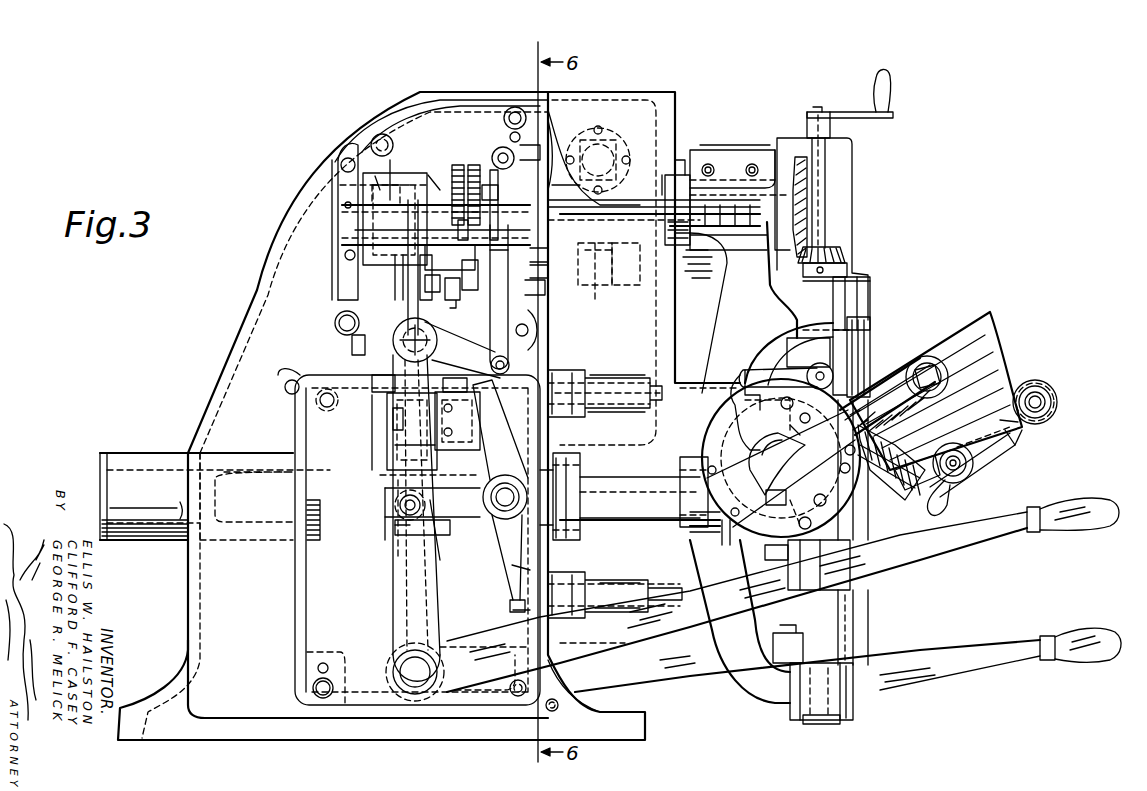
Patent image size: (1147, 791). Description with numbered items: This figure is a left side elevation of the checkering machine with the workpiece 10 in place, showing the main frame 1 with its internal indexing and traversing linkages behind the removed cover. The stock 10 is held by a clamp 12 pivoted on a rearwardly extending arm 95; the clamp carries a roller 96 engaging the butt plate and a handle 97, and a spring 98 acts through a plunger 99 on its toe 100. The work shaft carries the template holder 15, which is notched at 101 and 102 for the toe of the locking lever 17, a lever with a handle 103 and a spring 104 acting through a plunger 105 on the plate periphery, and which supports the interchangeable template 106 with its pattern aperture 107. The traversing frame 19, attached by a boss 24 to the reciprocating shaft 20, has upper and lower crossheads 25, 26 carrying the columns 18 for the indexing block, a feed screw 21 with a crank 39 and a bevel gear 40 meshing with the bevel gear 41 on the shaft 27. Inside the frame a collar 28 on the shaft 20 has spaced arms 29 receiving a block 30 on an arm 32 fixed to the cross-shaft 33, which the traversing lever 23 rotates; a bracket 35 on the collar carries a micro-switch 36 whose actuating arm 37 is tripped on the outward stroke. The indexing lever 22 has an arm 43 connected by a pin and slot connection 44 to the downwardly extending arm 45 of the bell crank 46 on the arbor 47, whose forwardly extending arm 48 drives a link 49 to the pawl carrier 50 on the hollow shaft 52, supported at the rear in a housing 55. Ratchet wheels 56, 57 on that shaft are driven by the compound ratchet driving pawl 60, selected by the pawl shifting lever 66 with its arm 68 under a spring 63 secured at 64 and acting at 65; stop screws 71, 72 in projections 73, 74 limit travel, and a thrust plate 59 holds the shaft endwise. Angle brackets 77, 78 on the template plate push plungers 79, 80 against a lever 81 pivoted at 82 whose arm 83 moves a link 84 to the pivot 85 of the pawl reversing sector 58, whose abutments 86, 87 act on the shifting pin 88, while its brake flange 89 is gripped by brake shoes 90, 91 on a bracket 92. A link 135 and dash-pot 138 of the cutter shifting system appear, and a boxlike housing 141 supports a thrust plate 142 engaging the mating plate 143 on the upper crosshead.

The main frame 1 is at (612, 90).
The workpiece 10 is at (990, 357).
The clamp 12 is at (1005, 438).
The template holder 15 is at (840, 500).
The locking lever 17 is at (845, 392).
The columns 18 is at (850, 620).
The traversing frame 19 is at (700, 545).
The reciprocating shaft 20 is at (610, 512).
The feed screw 21 is at (827, 215).
The indexing lever 22 is at (1090, 502).
The traversing lever 23 is at (1090, 633).
The boss 24 is at (690, 522).
The upper crosshead 25 is at (855, 305).
The lower crosshead 26 is at (852, 695).
The shaft 27 is at (640, 228).
The collar 28 is at (395, 525).
The arms 29 is at (385, 492).
The block 30 is at (433, 555).
The arm 32 is at (432, 575).
The cross-shaft 33 is at (415, 680).
The bracket 35 is at (385, 455).
The micro-switch 36 is at (455, 450).
The actuating arm 37 is at (458, 438).
The crank 39 is at (896, 82).
The bevel gear 40 is at (840, 256).
The bevel gear 41 is at (810, 178).
The arm 43 is at (398, 555).
The pin and slot connection 44 is at (375, 428).
The downwardly extending arm 45 is at (375, 390).
The bell crank 46 is at (345, 322).
The arbor 47 is at (350, 347).
The forwardly extending arm 48 is at (470, 355).
The link 49 is at (505, 360).
The pawl carrier 50 is at (494, 162).
The hollow shaft 52 is at (390, 195).
The housing 55 is at (380, 175).
The ratchet wheel 56 is at (474, 170).
The ratchet wheel 57 is at (455, 172).
The pawl reversing sector 58 is at (428, 175).
The thrust plate 59 is at (560, 170).
The compound ratchet driving pawl 60 is at (480, 212).
The spring 63 is at (540, 256).
The spring anchorage 64 is at (548, 230).
The spring connection 65 is at (540, 290).
The pawl shifting lever 66 is at (475, 282).
The arm 68 is at (469, 236).
The stop screw 71 is at (503, 150).
The stop screw 72 is at (508, 268).
The projection 73 is at (530, 140).
The projection 74 is at (540, 271).
The angle bracket 77 is at (745, 377).
The angle bracket 78 is at (805, 537).
The plunger 79 is at (657, 402).
The plunger 80 is at (657, 592).
The lever 81 is at (515, 570).
The pivot 82 is at (502, 512).
The arm 83 is at (450, 522).
The link 84 is at (395, 280).
The pivot 85 is at (385, 218).
The abutment 86 is at (435, 190).
The abutment 87 is at (412, 270).
The shifting pin 88 is at (430, 250).
The brake flange 89 is at (430, 289).
The brake shoe 90 is at (456, 293).
The brake shoe 91 is at (425, 280).
The bracket 92 is at (435, 350).
The rearwardly extending arm 95 is at (880, 470).
The roller 96 is at (1052, 395).
The handle 97 is at (1058, 410).
The spring 98 is at (905, 500).
The plunger 99 is at (940, 485).
The toe 100 is at (948, 500).
The notch 101 is at (745, 418).
The notch 102 is at (700, 453).
The handle 103 is at (925, 365).
The spring 104 is at (905, 408).
The plunger 105 is at (798, 430).
The template 106 is at (722, 540).
The aperture 107 is at (780, 495).
The link 135 is at (595, 295).
The dash-pot 138 is at (605, 155).
The boxlike housing 141 is at (695, 268).
The thrust plate 142 is at (682, 160).
The mating plate 143 is at (745, 150).